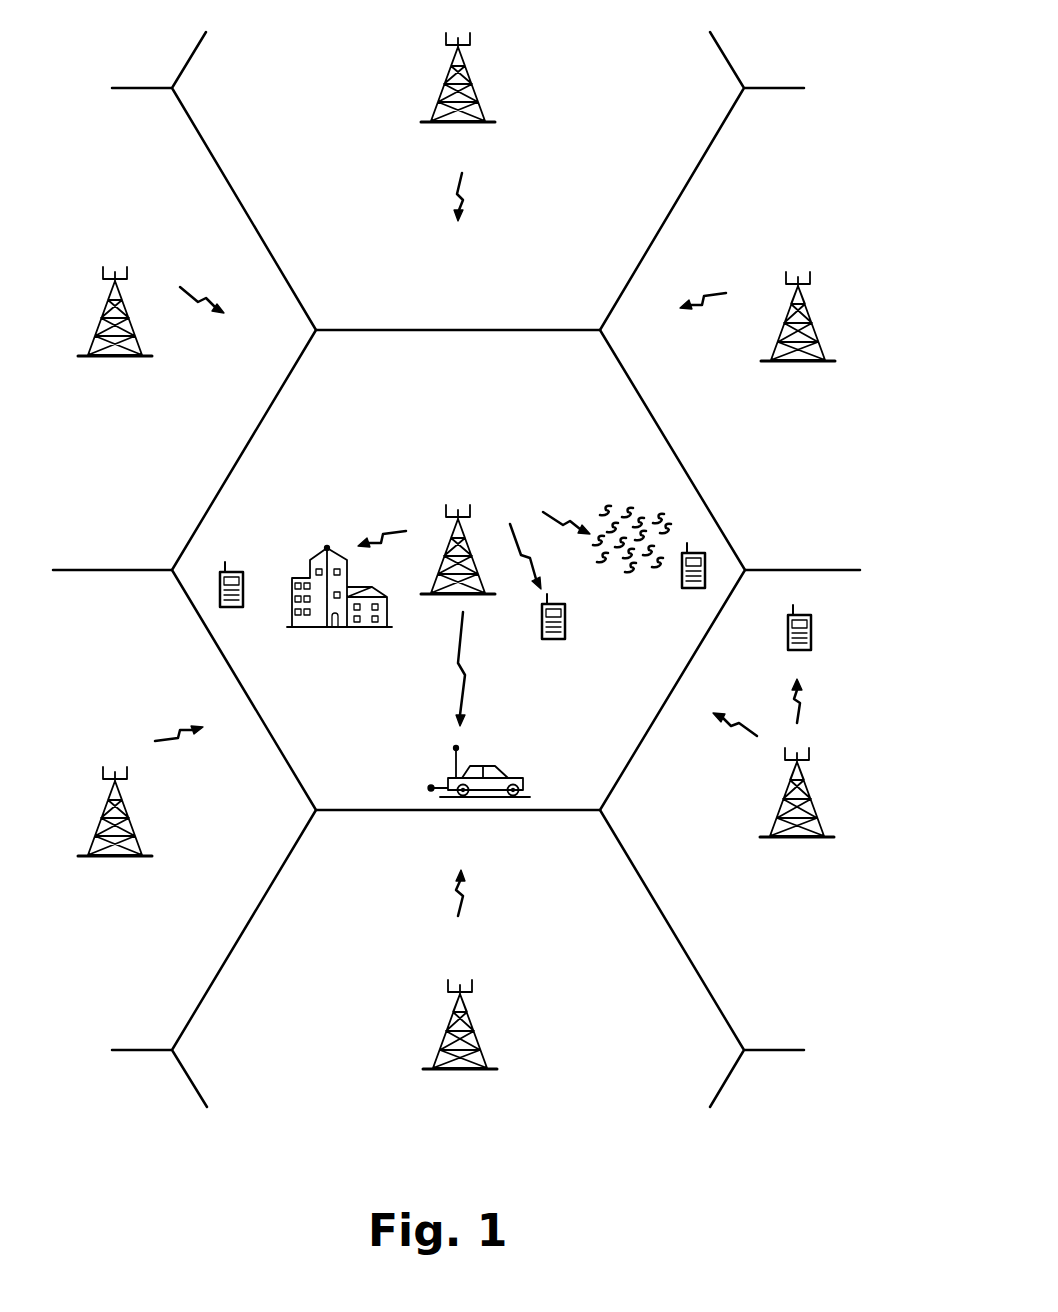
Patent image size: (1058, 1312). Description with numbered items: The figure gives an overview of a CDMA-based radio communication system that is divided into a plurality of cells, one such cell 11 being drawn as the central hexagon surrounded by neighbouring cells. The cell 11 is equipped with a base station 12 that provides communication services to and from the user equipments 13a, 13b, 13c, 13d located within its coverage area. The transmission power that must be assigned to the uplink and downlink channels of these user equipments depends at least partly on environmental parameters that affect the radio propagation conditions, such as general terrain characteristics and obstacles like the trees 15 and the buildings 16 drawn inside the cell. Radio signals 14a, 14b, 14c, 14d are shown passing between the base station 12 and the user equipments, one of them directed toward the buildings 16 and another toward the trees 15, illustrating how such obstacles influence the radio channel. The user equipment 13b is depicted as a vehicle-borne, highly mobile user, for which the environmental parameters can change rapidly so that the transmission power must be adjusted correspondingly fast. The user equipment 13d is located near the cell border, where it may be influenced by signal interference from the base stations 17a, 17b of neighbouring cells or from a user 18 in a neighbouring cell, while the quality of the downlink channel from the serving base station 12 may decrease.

The cell 11 is at (218, 490).
The base station 12 is at (438, 508).
The user equipment 13a is at (213, 597).
The user equipment 13b is at (417, 785).
The user equipment 13c is at (572, 625).
The user equipment 13d is at (675, 578).
The radio signal 14a is at (380, 530).
The radio signal 14b is at (468, 655).
The radio signal 14c is at (520, 530).
The radio signal 14d is at (560, 510).
The trees 15 is at (655, 505).
The buildings 16 is at (327, 636).
The base station 17a is at (820, 795).
The base station 17b is at (830, 331).
The user 18 is at (820, 636).